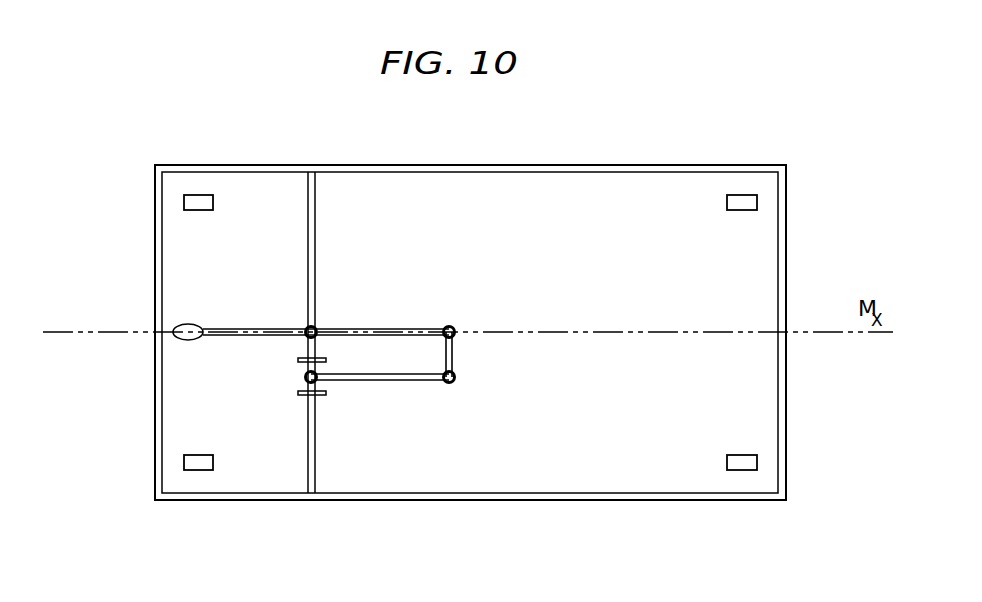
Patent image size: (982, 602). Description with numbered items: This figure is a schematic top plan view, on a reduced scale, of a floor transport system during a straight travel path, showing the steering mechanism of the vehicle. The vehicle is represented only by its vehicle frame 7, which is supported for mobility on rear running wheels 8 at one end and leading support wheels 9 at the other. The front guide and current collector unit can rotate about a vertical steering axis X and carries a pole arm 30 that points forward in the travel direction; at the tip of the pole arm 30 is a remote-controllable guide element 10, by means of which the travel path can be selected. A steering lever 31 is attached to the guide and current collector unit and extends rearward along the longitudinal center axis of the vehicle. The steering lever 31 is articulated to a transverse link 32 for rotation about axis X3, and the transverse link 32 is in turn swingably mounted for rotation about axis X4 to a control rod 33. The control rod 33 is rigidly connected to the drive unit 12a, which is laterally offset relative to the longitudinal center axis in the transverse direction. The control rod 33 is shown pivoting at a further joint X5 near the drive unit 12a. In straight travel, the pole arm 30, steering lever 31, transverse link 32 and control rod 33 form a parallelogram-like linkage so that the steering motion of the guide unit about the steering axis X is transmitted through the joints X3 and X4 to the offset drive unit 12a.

The vehicle frame 7 is at (460, 160).
The rear running wheels 8 is at (727, 203).
The leading support wheels 9 is at (213, 203).
The remote-controllable guide element 10 is at (188, 324).
The drive unit 12a is at (299, 398).
The pole arm 30 is at (260, 328).
The steering lever 31 is at (385, 328).
The transverse link 32 is at (454, 356).
The control rod 33 is at (364, 381).
The vertical steering axis X is at (316, 327).
The axis x3 X3 is at (455, 328).
The axis x4 X4 is at (456, 379).
The joint X5 is at (303, 378).